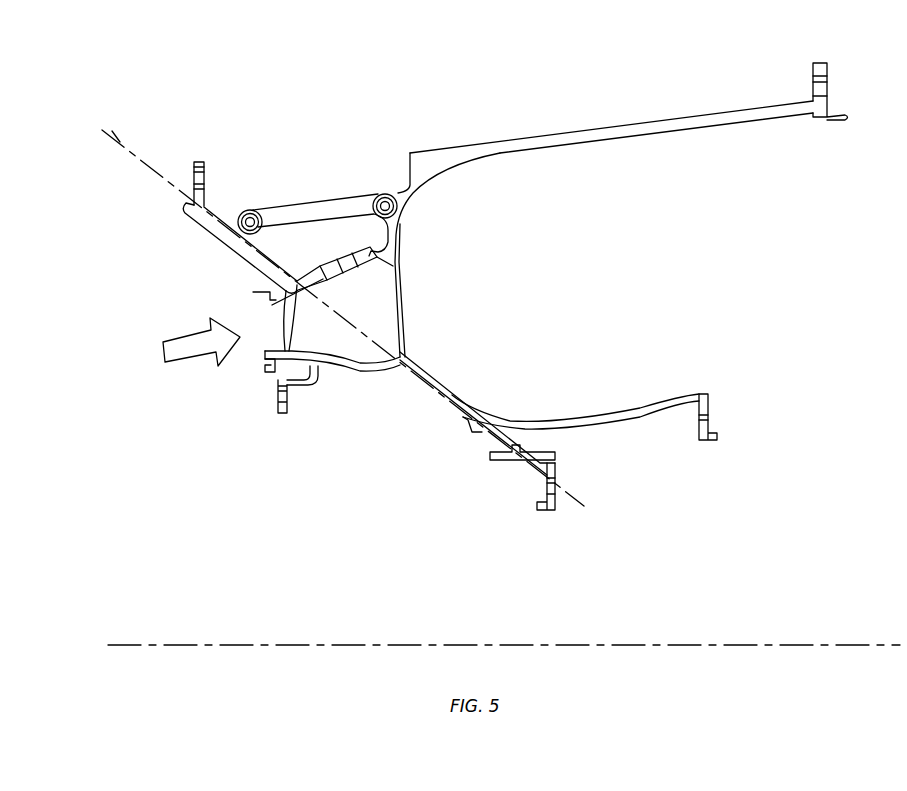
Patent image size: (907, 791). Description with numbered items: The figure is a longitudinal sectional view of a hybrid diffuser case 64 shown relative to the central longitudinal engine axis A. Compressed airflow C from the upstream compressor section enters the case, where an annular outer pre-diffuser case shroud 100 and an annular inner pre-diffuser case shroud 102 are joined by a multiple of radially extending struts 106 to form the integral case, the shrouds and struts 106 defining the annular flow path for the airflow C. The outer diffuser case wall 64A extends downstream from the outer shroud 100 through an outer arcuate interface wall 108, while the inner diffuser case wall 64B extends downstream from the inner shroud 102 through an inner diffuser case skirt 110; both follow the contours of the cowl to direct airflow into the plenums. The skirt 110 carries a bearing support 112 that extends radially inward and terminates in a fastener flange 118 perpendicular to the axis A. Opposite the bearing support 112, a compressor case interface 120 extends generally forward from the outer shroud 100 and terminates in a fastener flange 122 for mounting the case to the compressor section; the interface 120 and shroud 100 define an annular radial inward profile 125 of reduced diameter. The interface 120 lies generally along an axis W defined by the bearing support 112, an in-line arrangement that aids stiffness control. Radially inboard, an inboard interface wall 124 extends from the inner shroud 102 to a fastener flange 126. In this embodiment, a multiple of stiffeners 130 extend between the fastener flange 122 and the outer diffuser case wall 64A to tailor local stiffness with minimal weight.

The hybrid diffuser case 64 is at (544, 81).
The outer diffuser case wall 64A is at (707, 116).
The inner diffuser case wall 64B is at (606, 420).
The annular outer pre-diffuser case shroud 100 is at (345, 262).
The annular inner pre-diffuser case shroud 102 is at (350, 367).
The strut 106 is at (379, 317).
The outer arcuate interface wall 108 is at (410, 205).
The inner diffuser case skirt 110 is at (450, 398).
The bearing support 112 is at (490, 445).
The fastener flange 118 is at (558, 503).
The compressor case interface 120 is at (237, 249).
The fastener flange 122 is at (203, 166).
The inboard interface wall 124 is at (317, 395).
The annular radial inward profile 125 is at (375, 170).
The fastener flange 126 is at (278, 411).
The stiffener 130 is at (290, 212).
The axis W is at (125, 131).
The compressed airflow C is at (178, 352).
The central longitudinal engine axis A is at (822, 645).